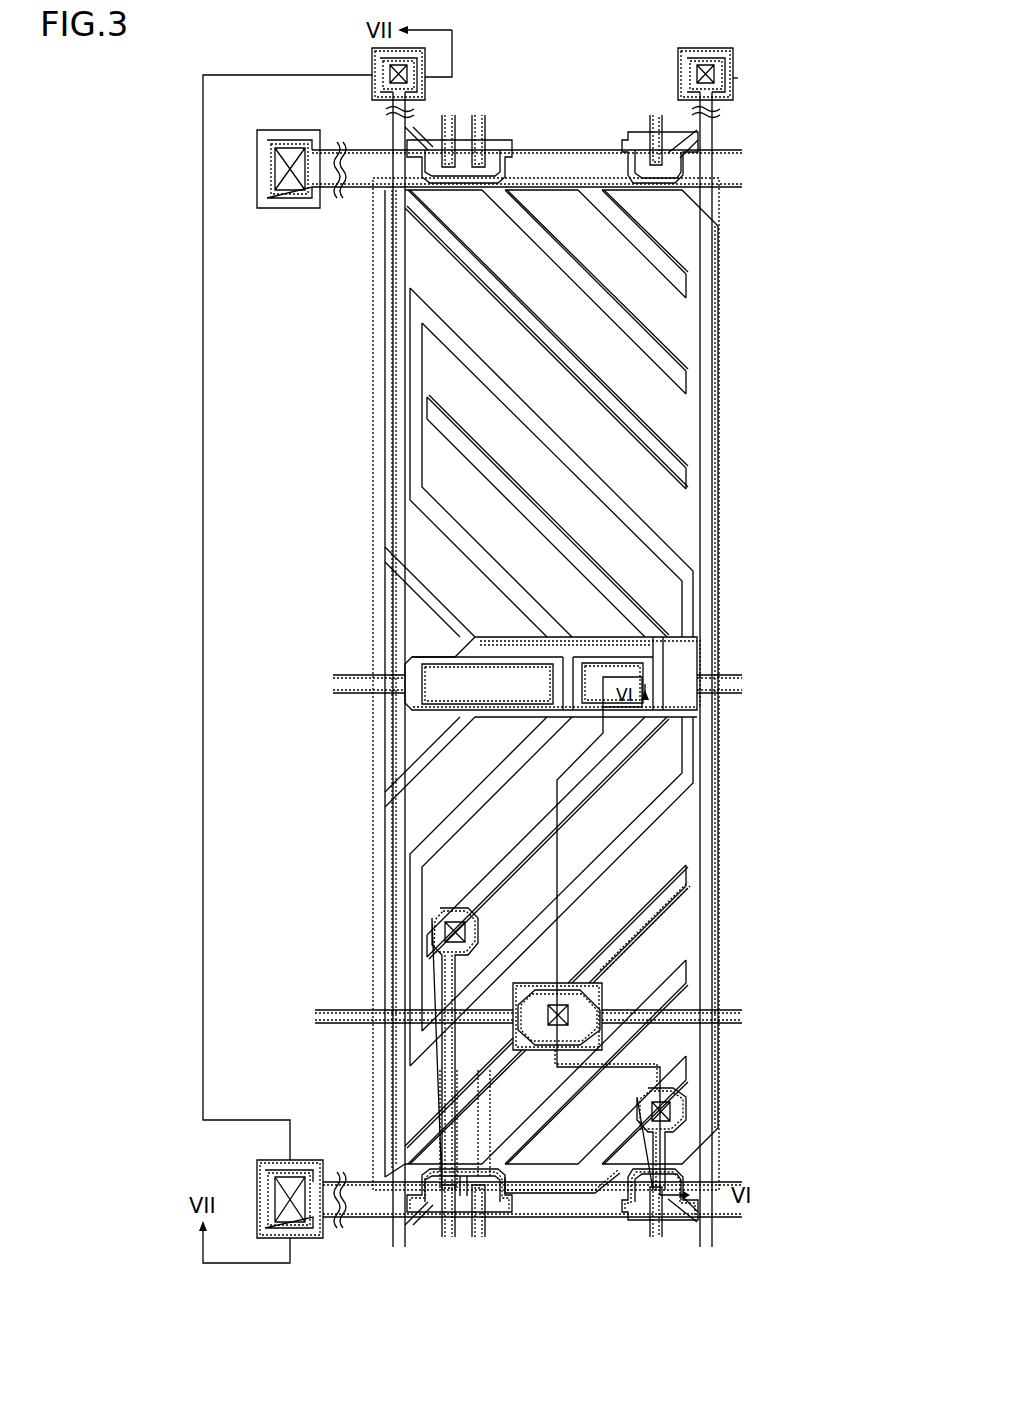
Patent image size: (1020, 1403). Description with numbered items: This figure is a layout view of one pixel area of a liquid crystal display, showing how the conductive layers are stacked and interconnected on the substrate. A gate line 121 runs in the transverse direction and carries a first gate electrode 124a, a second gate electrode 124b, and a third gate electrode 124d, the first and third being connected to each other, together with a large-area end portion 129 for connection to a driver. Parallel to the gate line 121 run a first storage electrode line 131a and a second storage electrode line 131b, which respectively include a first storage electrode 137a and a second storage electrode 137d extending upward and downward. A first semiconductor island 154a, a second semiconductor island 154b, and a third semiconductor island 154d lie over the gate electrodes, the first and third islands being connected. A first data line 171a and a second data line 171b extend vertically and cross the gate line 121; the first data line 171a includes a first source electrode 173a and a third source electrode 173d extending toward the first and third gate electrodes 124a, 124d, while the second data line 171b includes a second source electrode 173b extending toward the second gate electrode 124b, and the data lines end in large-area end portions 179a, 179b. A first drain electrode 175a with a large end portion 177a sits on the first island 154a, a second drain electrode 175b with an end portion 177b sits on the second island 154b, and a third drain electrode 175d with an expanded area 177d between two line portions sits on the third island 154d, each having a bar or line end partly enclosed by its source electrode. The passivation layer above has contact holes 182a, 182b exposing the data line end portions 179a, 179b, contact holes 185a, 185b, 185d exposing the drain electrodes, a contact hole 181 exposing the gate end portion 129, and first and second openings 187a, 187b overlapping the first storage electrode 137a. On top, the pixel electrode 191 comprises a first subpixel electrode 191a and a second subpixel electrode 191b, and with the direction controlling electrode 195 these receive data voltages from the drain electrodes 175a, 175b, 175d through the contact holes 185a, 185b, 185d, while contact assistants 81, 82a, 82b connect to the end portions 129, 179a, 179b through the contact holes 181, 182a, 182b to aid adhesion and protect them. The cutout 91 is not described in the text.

The contact assistant 81 is at (300, 1160).
The contact assistant 82a is at (426, 88).
The contact assistant 82b is at (736, 78).
The cutout 91 is at (600, 482).
The gate line 121 is at (352, 1218).
The first gate electrode 124a is at (414, 1151).
The second gate electrode 124b is at (621, 1173).
The third gate electrode 124d is at (507, 1193).
The end portion of gate line 129 is at (303, 1233).
The first storage electrode line 131a is at (355, 672).
The second storage electrode line 131b is at (339, 1013).
The first storage electrode 137a is at (712, 716).
The second storage electrode 137d is at (548, 983).
The first semiconductor island 154a is at (420, 1219).
The second semiconductor island 154b is at (673, 1217).
The third semiconductor island 154d is at (483, 1218).
The first data line 171a is at (397, 318).
The second data line 171b is at (712, 406).
The first source electrode 173a is at (443, 1218).
The second source electrode 173b is at (650, 1217).
The third source electrode 173d is at (468, 1219).
The first drain electrode 175a is at (440, 1094).
The second drain electrode 175b is at (663, 1147).
The third drain electrode 175d is at (483, 1137).
The end portion of first drain electrode 177a is at (432, 937).
The end portion of second drain electrode 177b is at (685, 1087).
The expanded area of third drain electrode 177d is at (598, 1003).
The end portion of first data line 179a is at (382, 80).
The end portion of second data line 179b is at (689, 80).
The contact hole 181 is at (275, 1187).
The contact hole 182a is at (391, 72).
The contact hole 182b is at (716, 72).
The contact hole 185a is at (440, 926).
The contact hole 185b is at (672, 1110).
The contact hole 185d is at (568, 1010).
The first opening 187a is at (606, 663).
The second opening 187b is at (440, 706).
The pixel electrode 191 is at (800, 498).
The first subpixel electrode 191a is at (640, 540).
The second subpixel electrode 191b is at (720, 505).
The direction controlling electrode 195 is at (373, 442).